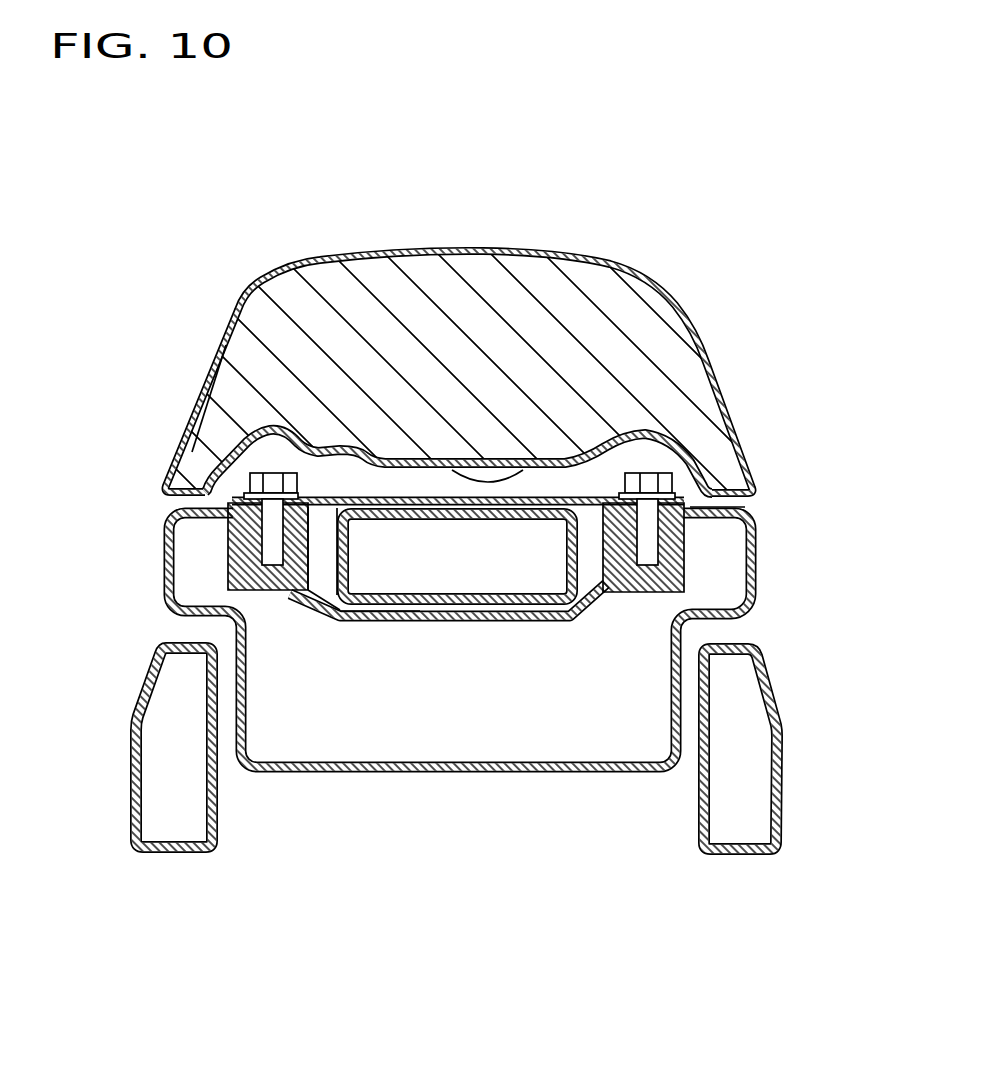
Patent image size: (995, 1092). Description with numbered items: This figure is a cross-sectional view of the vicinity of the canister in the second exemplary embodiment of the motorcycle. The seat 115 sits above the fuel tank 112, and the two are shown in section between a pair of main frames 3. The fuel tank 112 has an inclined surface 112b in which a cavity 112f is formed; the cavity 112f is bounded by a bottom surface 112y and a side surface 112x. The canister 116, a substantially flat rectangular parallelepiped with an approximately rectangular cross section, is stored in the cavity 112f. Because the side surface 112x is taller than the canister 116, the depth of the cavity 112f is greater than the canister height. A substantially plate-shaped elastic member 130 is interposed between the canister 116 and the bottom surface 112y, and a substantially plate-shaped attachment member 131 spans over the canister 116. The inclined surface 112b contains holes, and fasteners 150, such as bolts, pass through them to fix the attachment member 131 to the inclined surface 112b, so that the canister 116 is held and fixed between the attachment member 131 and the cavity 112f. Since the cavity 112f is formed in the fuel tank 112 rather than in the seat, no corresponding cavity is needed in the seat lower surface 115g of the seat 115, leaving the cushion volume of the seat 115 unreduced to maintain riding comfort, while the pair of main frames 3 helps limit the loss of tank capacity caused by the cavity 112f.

The main frames 3 is at (170, 853).
The fuel tank 112 is at (163, 547).
The inclined surface 112b is at (740, 504).
The cavity 112f is at (331, 525).
The side surface 112x is at (322, 592).
The bottom surface 112y is at (356, 604).
The seat 115 is at (630, 266).
The seat lower surface 115g is at (518, 460).
The canister 116 is at (578, 565).
The elastic member 130 is at (513, 606).
The attachment member 131 is at (225, 345).
The fasteners 150 is at (260, 477).